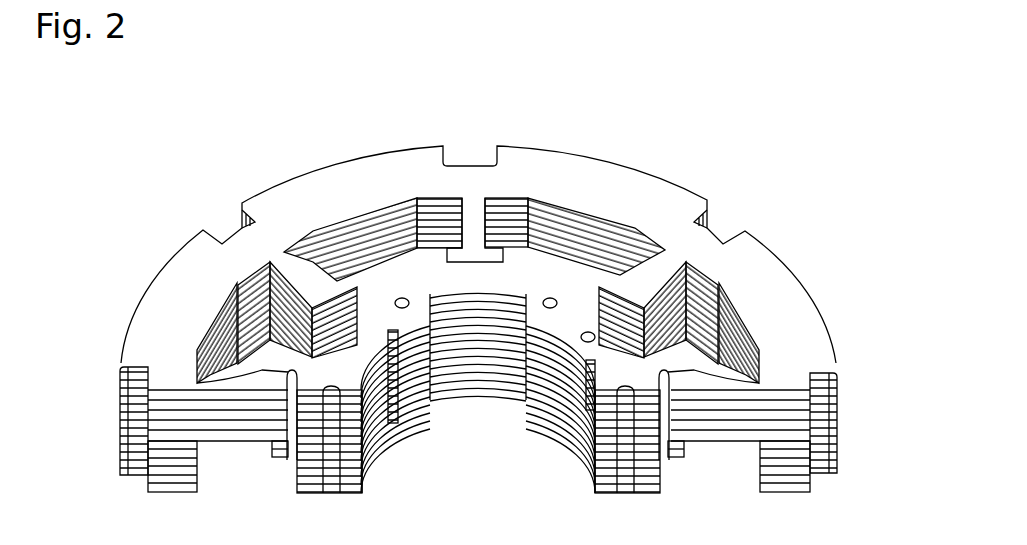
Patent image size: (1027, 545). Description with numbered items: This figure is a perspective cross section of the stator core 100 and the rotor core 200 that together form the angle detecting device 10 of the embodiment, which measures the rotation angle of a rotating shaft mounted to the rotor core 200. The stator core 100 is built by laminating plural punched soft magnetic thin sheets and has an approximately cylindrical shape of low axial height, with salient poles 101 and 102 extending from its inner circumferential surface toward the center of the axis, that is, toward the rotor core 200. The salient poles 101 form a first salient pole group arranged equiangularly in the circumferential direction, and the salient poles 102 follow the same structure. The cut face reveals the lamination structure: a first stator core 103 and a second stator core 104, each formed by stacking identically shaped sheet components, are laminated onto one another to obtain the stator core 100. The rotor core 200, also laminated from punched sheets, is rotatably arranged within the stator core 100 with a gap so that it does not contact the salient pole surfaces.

The angle detecting device 10 is at (690, 170).
The stator core 100 is at (594, 158).
The salient pole 101 is at (473, 217).
The salient pole 102 is at (380, 280).
The first stator core 103 is at (110, 375).
The second stator core 104 is at (110, 430).
The rotor core 200 is at (418, 296).